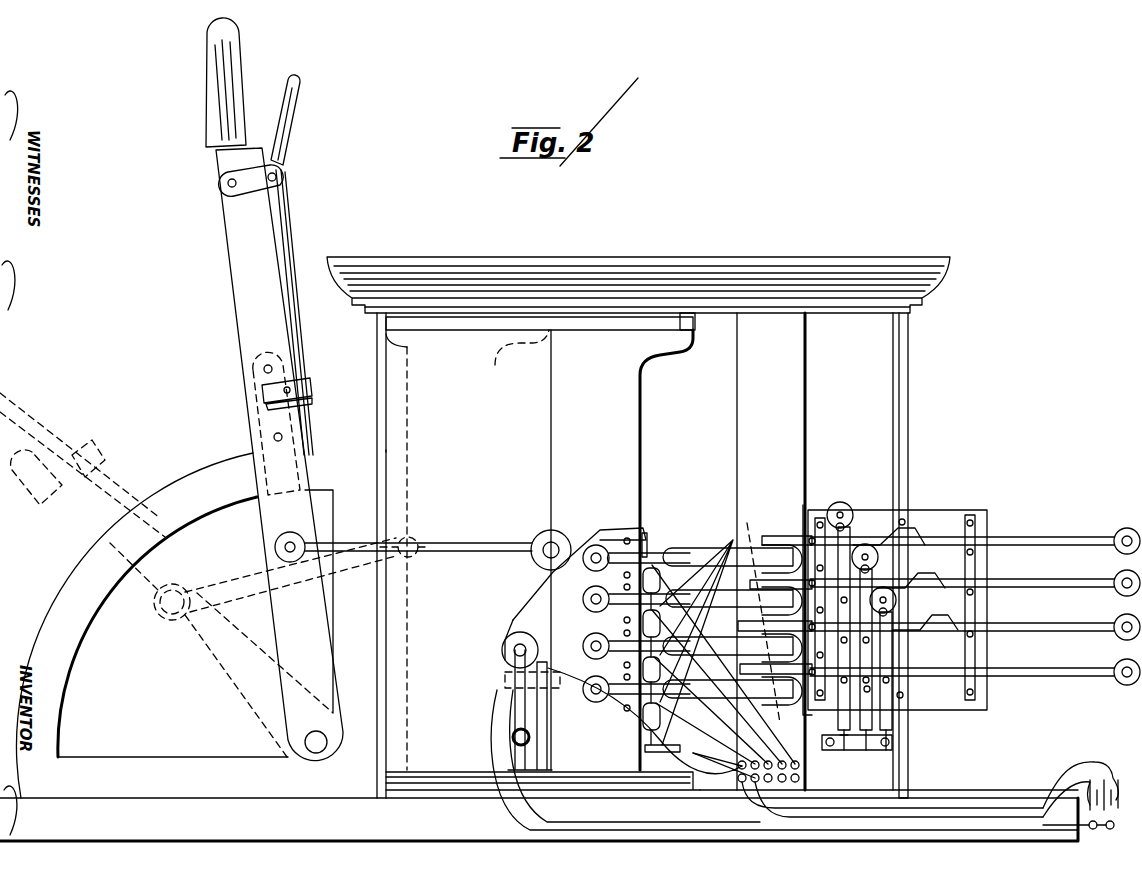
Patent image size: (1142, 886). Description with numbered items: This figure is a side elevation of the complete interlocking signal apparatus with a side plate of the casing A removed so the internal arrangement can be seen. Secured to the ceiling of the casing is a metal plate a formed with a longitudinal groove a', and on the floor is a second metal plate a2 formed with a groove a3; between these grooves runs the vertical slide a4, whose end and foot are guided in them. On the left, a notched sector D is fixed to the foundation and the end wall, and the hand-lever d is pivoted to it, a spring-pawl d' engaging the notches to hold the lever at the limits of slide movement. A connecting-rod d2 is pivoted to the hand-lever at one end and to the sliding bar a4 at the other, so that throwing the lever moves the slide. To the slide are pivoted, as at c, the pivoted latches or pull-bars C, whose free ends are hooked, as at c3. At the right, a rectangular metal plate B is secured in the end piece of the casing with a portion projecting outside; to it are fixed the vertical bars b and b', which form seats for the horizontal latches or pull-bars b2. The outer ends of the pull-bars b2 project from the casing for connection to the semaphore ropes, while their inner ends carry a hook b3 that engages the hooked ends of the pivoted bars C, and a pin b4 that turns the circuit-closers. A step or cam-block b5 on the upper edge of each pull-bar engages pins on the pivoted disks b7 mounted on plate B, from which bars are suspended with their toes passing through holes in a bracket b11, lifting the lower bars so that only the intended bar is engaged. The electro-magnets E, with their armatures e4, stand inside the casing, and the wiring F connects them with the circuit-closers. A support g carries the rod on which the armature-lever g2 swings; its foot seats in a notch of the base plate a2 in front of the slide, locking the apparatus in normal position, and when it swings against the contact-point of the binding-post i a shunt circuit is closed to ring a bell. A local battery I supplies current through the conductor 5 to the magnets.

The casing A is at (638, 527).
The metal plate a is at (539, 543).
The longitudinal groove a' is at (671, 541).
The metal plate a2 is at (543, 786).
The groove a3 is at (713, 752).
The vertical slide a4 is at (493, 452).
The rectangular metal plate B is at (895, 601).
The vertical bar b is at (818, 595).
The vertical bar b' is at (983, 605).
The latches or pull-bars b2 is at (975, 603).
The hook b3 is at (775, 595).
The pin or lug b4 is at (864, 624).
The step or cam-block b5 is at (905, 574).
The pivoted disks b7 is at (881, 607).
The bracket b11 is at (849, 749).
The pivoted latches or pull-bars C is at (728, 613).
The pivot c is at (601, 619).
The hooked end c3 is at (782, 625).
The sector D is at (198, 595).
The hand-lever d is at (274, 389).
The spring-pawl d' is at (266, 265).
The connecting-rod d2 is at (423, 547).
The electro-magnets E is at (661, 659).
The armatures e4 is at (687, 631).
The wiring F is at (673, 639).
The support g is at (535, 705).
The armature-lever g2 is at (784, 761).
The binding-post i is at (509, 738).
The local battery I is at (1085, 795).
The conductor 5 is at (825, 776).